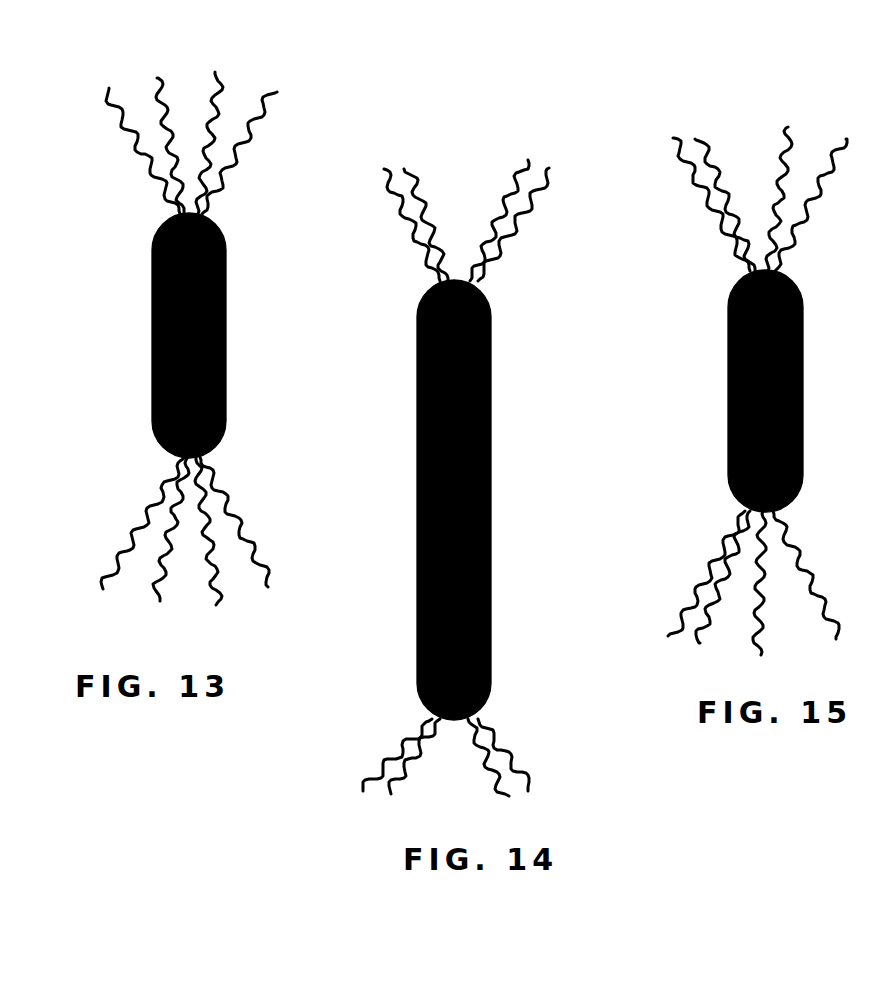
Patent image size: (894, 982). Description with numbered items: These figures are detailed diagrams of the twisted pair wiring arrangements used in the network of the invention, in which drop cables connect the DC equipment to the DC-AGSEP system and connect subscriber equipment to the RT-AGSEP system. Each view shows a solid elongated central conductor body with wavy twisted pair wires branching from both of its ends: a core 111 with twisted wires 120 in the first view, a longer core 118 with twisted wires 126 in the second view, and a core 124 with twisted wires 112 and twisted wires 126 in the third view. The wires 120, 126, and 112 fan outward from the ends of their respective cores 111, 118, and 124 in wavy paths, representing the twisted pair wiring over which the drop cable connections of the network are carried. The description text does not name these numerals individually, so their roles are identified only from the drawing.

In FIG. 13, the nanorod core 111 is at (153, 305).
In FIG. 13, the polymer strands 120 is at (117, 121).
In FIG. 14, the elongated nanorod core 118 is at (417, 437).
In FIG. 14, the polymer strands 126 is at (592, 787).
In FIG. 15, the polymer strands 126 is at (668, 132).
In FIG. 15, the nanorod core 124 is at (728, 353).
In FIG. 15, the polymer strands 112 is at (810, 657).